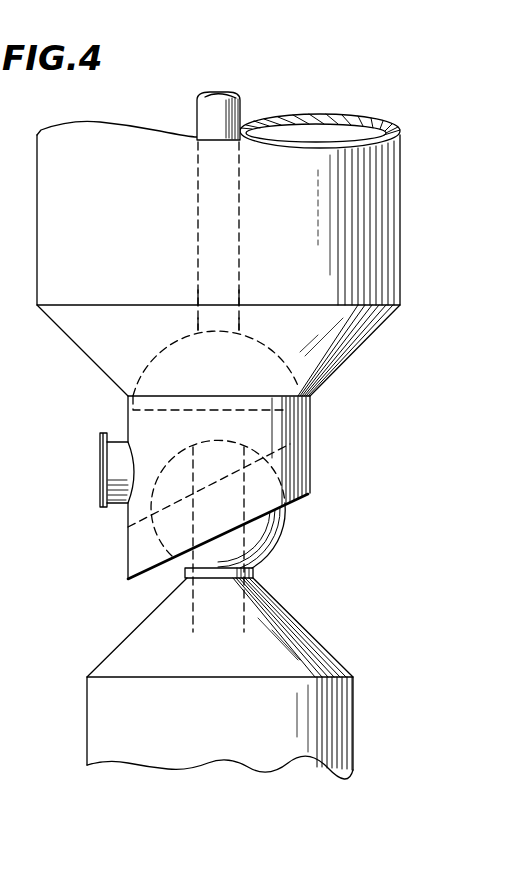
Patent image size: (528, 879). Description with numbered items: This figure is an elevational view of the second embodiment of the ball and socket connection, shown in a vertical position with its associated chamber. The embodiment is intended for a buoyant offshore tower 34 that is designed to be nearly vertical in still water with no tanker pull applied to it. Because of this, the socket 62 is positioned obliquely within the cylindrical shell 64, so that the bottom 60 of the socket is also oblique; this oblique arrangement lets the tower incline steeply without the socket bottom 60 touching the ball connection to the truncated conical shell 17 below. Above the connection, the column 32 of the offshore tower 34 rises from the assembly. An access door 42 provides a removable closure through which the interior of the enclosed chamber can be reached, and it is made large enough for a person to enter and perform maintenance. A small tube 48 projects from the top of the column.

The truncated conical top 17 is at (312, 633).
The column 32 is at (401, 250).
The offshore tower 34 is at (415, 174).
The access door 42 is at (100, 460).
The vent tube 48 is at (242, 103).
The socket bottom 60 is at (297, 507).
The socket 62 is at (130, 563).
The cylindrical shell 64 is at (312, 420).